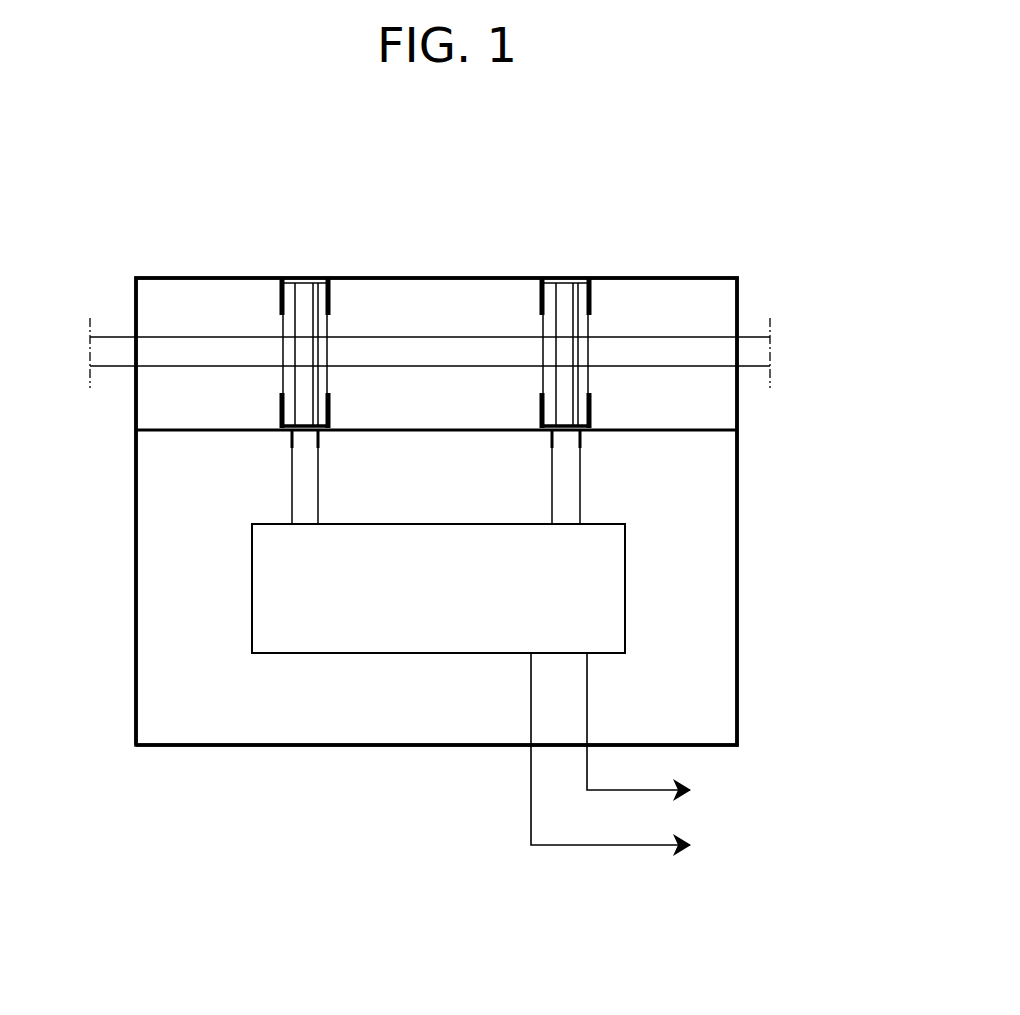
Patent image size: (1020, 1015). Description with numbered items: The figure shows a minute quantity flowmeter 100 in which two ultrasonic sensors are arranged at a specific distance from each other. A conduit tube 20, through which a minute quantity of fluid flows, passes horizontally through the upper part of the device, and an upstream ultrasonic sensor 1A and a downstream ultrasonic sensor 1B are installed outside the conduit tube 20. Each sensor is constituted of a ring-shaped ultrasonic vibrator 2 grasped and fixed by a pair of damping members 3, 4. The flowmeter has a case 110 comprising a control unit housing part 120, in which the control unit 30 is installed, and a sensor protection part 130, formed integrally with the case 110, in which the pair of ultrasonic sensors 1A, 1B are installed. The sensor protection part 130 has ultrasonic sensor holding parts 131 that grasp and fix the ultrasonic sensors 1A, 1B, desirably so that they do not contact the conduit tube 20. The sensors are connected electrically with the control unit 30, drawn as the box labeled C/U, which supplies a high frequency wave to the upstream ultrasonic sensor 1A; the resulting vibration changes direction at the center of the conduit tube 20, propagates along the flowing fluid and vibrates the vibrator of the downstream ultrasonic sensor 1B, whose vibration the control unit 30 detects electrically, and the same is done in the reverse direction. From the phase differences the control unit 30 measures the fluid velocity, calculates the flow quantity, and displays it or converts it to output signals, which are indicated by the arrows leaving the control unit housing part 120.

The minute quantity flowmeter 100 is at (158, 482).
The case 110 is at (183, 553).
The control unit housing part 120 is at (703, 593).
The sensor protection part 130 is at (692, 290).
The ultrasonic sensor holding part 131 is at (330, 404).
The upstream ultrasonic sensor 1A is at (335, 330).
The downstream ultrasonic sensor 1B is at (595, 324).
The ultrasonic vibrator 2 is at (305, 303).
The damping member 3 is at (288, 325).
The damping member 4 is at (318, 297).
The conduit tube 20 is at (682, 353).
The control unit 30 is at (402, 547).